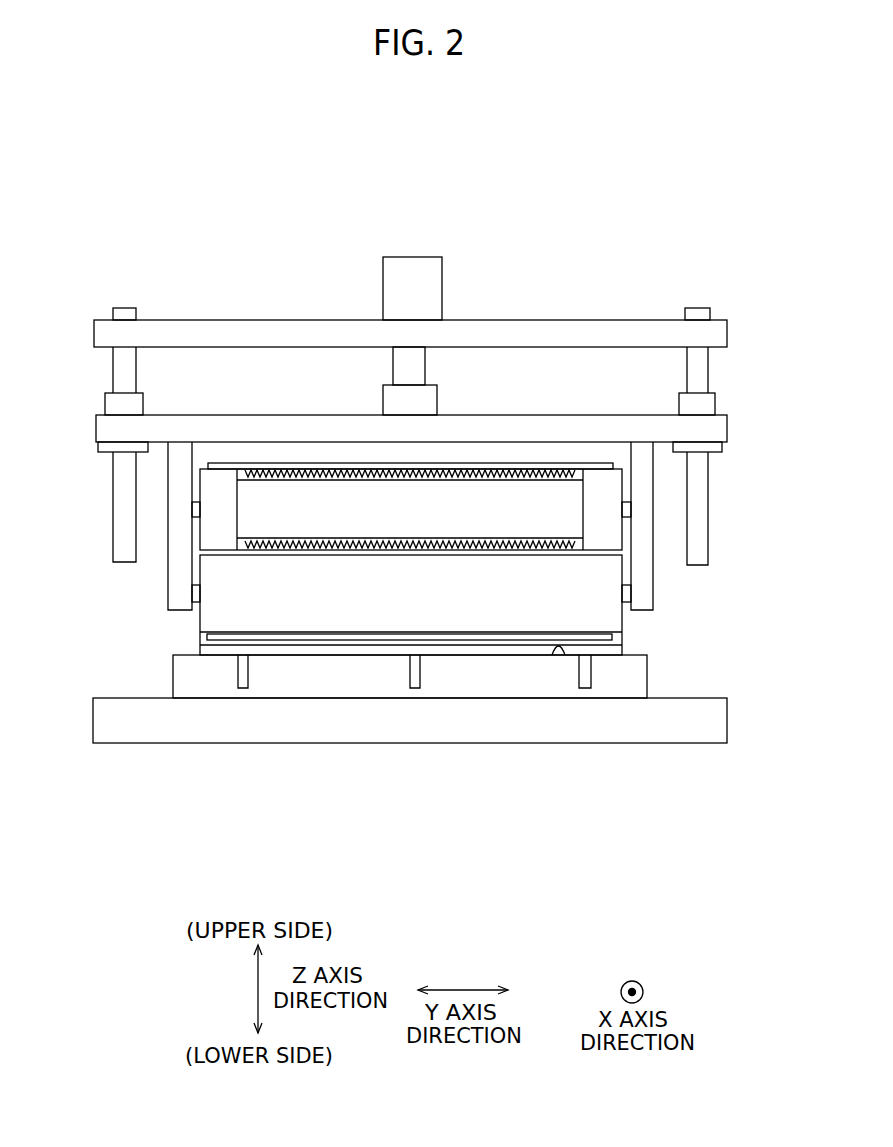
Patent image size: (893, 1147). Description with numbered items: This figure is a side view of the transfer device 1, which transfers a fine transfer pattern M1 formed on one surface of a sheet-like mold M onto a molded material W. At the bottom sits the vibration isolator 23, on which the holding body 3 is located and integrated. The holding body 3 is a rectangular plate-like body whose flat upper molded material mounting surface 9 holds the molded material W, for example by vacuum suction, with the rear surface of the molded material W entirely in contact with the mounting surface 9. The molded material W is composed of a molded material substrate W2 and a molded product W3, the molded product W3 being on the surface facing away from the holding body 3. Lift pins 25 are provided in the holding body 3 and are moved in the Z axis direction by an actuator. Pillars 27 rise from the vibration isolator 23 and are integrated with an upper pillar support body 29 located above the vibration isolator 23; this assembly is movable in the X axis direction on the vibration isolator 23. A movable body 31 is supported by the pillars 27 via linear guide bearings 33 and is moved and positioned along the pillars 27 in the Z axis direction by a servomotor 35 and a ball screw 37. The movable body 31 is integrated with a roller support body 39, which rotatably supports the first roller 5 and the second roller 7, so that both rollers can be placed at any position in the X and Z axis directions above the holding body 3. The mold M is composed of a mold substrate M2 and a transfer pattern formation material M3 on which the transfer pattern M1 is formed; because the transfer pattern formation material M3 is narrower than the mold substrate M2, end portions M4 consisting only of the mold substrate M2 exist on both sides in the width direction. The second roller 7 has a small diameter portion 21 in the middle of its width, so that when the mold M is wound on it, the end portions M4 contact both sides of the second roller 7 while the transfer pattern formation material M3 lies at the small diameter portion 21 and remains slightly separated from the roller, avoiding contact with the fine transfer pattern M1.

The transfer device 1 is at (603, 140).
The holding body 3 is at (510, 690).
The first roller 5 is at (217, 617).
The second roller 7 is at (517, 500).
The molded material mounting surface 9 is at (565, 652).
The small diameter portion 21 is at (477, 497).
The vibration isolator 23 is at (687, 743).
The lift pins 25 is at (238, 676).
The pillars 27 is at (113, 513).
The upper pillar support body 29 is at (637, 320).
The movable body 31 is at (727, 430).
The linear guide bearings 33 is at (105, 402).
The servomotor 35 is at (416, 257).
The ball screw 37 is at (427, 375).
The roller support body 39 is at (168, 596).
The sheet-like mold M is at (287, 456).
The fine transfer pattern M1 is at (290, 542).
The mold substrate M2 is at (333, 468).
The transfer pattern formation material M3 is at (257, 462).
The end portions of the mold M4 is at (215, 472).
The molded material W is at (338, 656).
The molded material substrate W2 is at (445, 650).
The molded product W3 is at (613, 640).